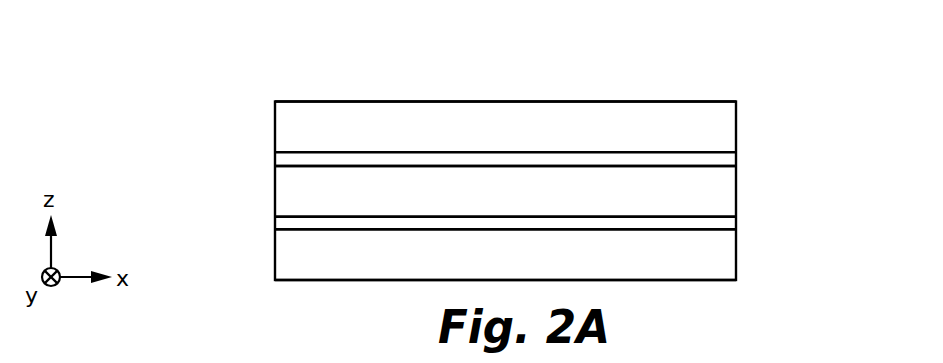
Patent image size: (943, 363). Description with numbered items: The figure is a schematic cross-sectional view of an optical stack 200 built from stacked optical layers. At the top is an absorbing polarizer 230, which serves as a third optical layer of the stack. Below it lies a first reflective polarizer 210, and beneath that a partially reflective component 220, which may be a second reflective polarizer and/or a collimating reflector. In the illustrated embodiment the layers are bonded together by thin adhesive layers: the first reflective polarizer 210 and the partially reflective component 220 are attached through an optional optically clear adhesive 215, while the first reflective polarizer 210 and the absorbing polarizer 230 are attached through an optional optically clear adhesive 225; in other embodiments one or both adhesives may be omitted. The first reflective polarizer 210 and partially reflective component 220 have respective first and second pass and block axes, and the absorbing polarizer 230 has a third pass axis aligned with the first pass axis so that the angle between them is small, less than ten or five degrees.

The optical stack 200 is at (212, 68).
The absorbing polarizer 230 is at (285, 126).
The optically clear adhesive 225 is at (728, 160).
The first reflective polarizer 210 is at (285, 195).
The optically clear adhesive 215 is at (728, 223).
The partially reflective component 220 is at (285, 260).